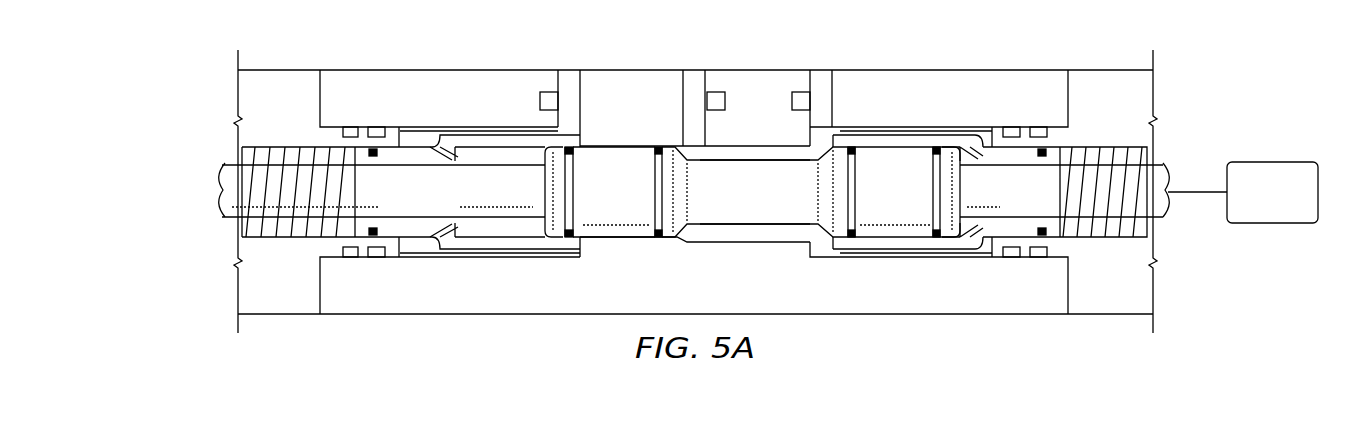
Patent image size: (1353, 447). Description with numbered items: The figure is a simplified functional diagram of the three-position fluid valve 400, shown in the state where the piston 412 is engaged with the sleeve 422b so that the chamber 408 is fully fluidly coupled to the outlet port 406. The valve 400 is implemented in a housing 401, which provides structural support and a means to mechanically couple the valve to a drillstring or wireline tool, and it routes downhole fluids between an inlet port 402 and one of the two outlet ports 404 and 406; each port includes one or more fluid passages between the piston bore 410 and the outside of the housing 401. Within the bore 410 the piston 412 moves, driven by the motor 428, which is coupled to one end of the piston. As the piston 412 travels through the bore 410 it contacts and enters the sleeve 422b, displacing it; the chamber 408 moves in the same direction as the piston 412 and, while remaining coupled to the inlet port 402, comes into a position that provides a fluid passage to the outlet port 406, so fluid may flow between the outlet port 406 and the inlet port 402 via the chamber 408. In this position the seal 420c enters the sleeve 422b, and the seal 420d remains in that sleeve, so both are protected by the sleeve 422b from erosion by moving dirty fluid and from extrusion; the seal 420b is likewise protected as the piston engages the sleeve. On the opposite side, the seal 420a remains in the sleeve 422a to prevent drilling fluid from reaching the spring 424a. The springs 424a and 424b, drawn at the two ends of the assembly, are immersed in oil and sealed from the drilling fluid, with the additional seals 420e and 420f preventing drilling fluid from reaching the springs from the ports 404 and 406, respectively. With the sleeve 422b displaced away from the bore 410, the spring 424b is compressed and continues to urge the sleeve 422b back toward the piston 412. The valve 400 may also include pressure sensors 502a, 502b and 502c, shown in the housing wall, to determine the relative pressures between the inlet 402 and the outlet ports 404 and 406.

The fluid valve 400 is at (209, 92).
The housing 401 is at (397, 68).
The inlet port 402 is at (690, 68).
The outlet port 404 is at (572, 70).
The outlet port 406 is at (822, 68).
The chamber 408 is at (707, 237).
The piston bore 410 is at (618, 240).
The piston 412 is at (770, 225).
The seal 420a is at (575, 150).
The seal 420b is at (658, 147).
The seal 420c is at (856, 150).
The seal 420d is at (935, 147).
The seal 420e is at (378, 228).
The seal 420f is at (1042, 160).
The sleeve 422a is at (477, 245).
The sleeve 422b is at (910, 250).
The spring 424a is at (236, 188).
The spring 424b is at (1145, 178).
The motor 428 is at (1275, 225).
The pressure sensor 502a is at (548, 92).
The pressure sensor 502b is at (717, 92).
The pressure sensor 502c is at (802, 92).